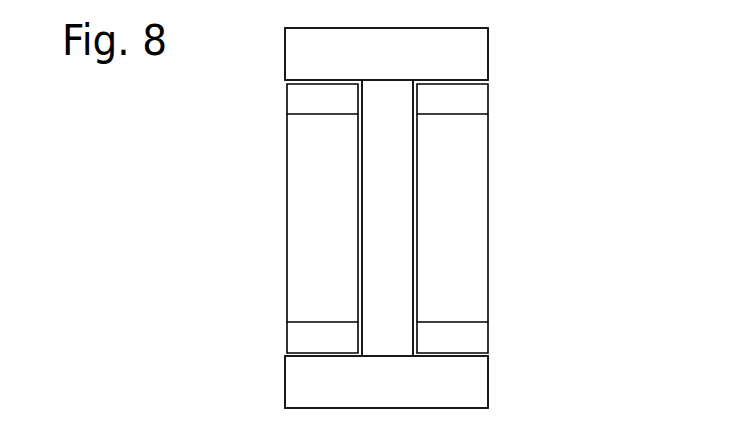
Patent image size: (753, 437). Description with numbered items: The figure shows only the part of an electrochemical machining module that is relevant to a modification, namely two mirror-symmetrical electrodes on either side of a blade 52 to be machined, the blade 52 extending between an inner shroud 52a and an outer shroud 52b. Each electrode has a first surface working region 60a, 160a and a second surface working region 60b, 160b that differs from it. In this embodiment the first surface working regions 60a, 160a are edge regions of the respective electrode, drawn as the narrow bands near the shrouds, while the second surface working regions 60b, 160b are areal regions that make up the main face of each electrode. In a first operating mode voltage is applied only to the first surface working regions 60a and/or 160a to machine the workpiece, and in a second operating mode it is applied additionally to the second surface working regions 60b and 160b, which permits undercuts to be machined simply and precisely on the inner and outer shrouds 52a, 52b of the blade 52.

The blade 52 is at (398, 158).
The inner shroud 52a is at (420, 399).
The outer shroud 52b is at (415, 67).
The first surface working region 60a is at (362, 100).
The second surface working region 60b is at (362, 168).
The first surface working region 160a is at (418, 98).
The second surface working region 160b is at (416, 195).